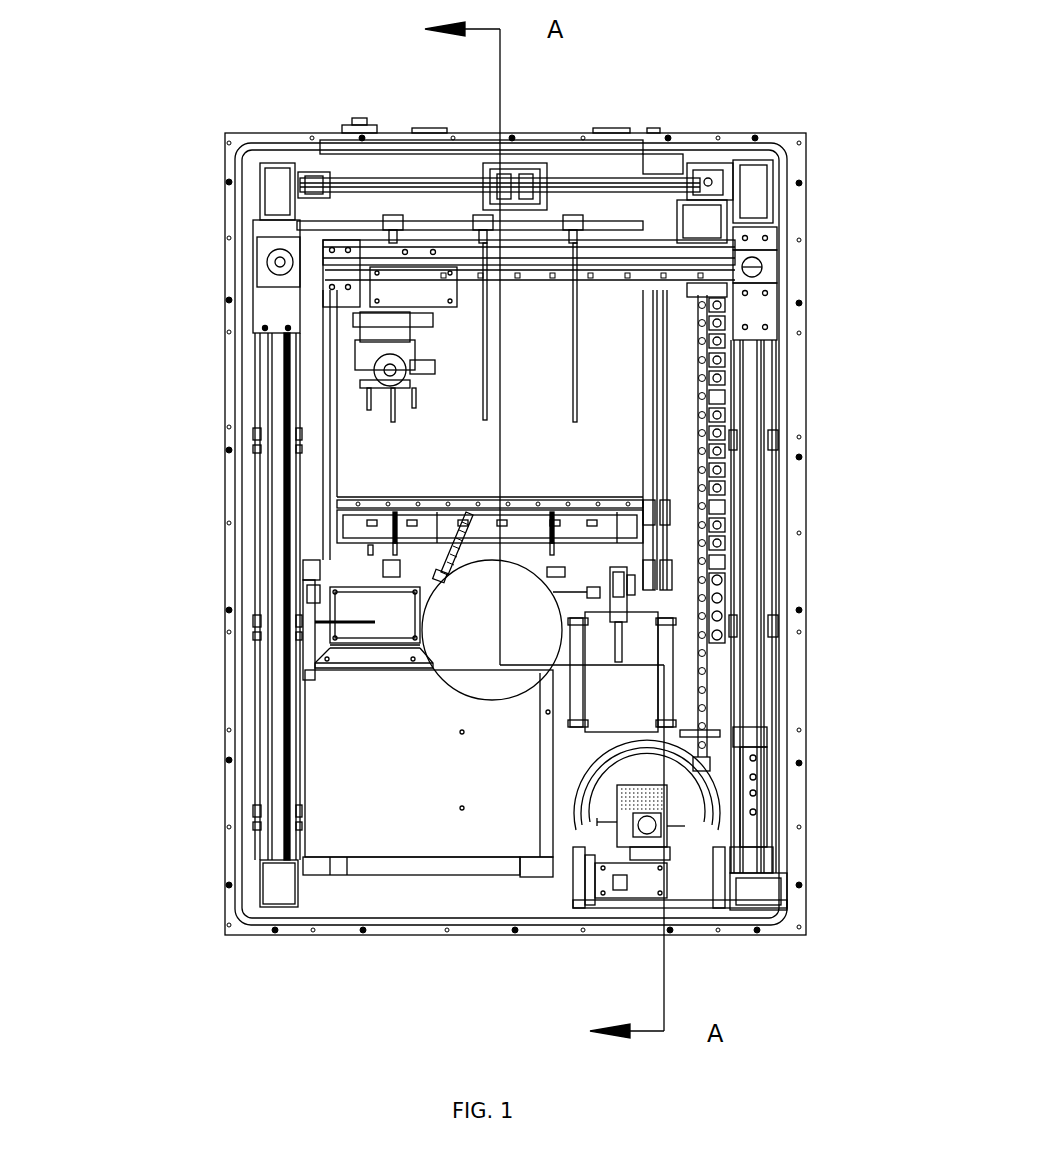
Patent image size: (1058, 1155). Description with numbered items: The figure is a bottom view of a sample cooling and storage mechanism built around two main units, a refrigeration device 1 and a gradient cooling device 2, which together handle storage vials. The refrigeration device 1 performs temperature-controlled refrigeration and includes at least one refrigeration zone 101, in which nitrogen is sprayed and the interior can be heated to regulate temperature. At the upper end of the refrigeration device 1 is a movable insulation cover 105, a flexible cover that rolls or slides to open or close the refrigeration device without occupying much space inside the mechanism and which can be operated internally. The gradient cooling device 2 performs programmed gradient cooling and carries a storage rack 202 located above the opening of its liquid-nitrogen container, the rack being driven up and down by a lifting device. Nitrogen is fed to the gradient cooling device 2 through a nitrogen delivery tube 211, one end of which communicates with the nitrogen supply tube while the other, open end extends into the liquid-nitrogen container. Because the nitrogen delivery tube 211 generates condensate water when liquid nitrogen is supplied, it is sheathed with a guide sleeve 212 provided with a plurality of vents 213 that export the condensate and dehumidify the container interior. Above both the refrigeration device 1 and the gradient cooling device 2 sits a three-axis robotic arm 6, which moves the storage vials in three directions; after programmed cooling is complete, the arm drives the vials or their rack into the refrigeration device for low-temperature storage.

The refrigeration device 1 is at (223, 146).
The gradient cooling device 2 is at (827, 583).
The three-axis robotic arm 6 is at (345, 257).
The refrigeration zone 101 is at (367, 527).
The movable insulation cover 105 is at (552, 343).
The storage rack 202 is at (617, 787).
The nitrogen delivery tube 211 is at (733, 863).
The guide sleeve 212 is at (705, 687).
The vents 213 is at (710, 613).